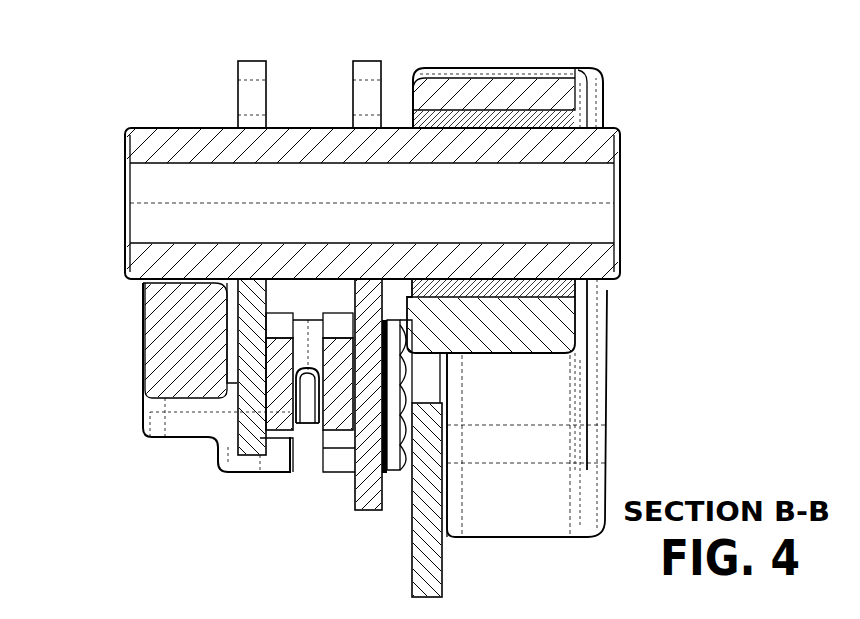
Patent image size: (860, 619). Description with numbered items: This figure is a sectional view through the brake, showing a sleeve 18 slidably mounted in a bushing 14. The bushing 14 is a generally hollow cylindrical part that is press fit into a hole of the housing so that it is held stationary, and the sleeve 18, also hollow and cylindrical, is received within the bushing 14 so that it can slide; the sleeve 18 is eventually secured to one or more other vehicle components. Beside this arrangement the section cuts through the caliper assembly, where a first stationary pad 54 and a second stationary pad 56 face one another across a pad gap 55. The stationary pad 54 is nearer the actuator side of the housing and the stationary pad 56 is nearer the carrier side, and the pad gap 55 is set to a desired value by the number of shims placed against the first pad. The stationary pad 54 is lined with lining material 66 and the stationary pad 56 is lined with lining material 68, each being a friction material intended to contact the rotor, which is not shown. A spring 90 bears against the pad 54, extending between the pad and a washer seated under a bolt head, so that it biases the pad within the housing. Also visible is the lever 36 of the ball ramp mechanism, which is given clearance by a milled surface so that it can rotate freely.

The bushing 14 is at (573, 112).
The sleeve 18 is at (613, 127).
The lever 36 is at (518, 538).
The stationary pad 54 is at (352, 103).
The pad gap 55 is at (293, 440).
The stationary pad 56 is at (237, 100).
The lining material 66 is at (335, 368).
The lining material 68 is at (282, 415).
The spring 90 is at (313, 424).